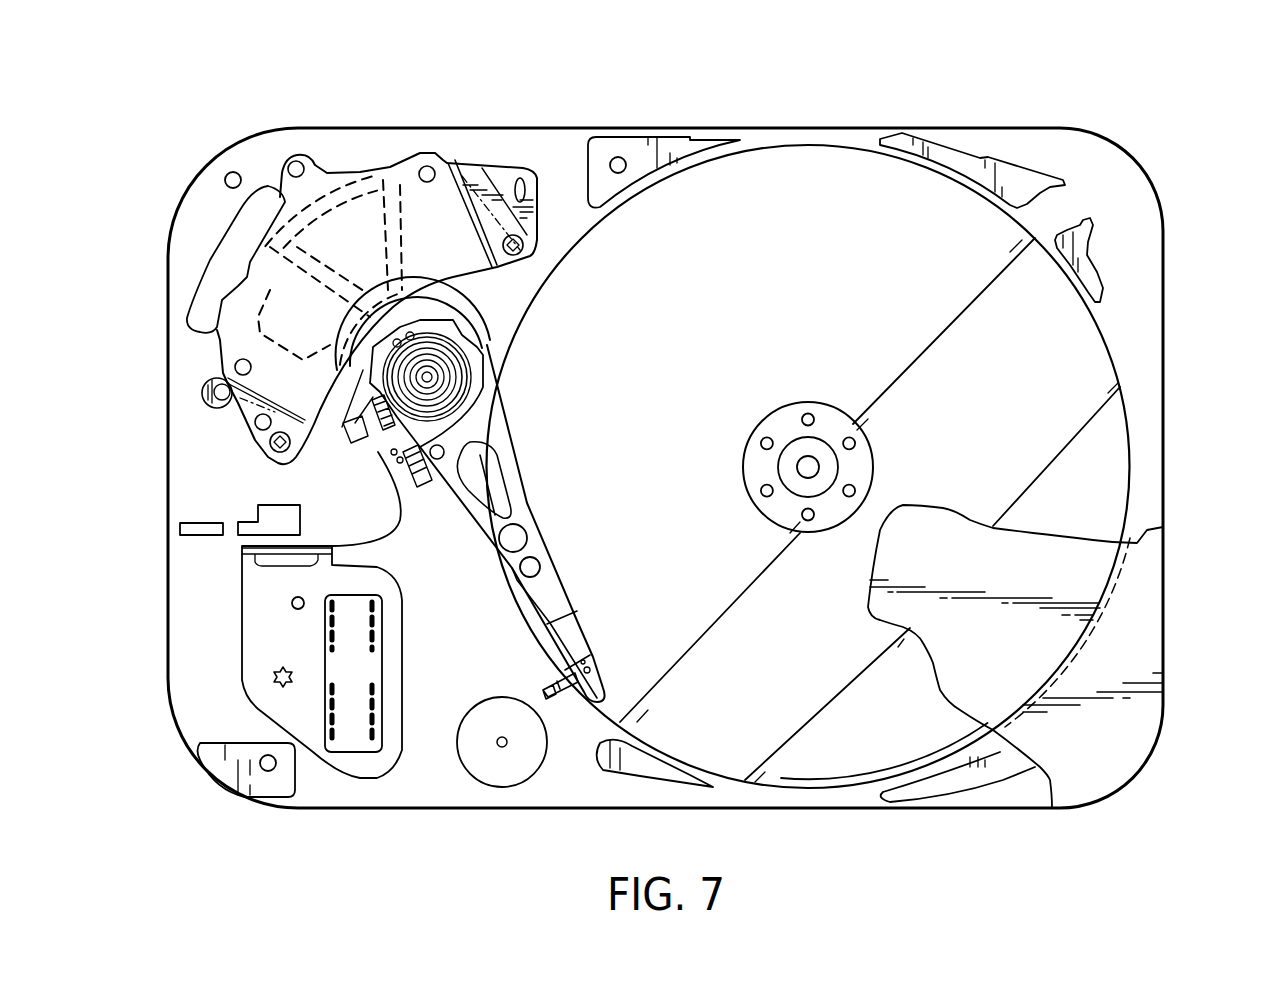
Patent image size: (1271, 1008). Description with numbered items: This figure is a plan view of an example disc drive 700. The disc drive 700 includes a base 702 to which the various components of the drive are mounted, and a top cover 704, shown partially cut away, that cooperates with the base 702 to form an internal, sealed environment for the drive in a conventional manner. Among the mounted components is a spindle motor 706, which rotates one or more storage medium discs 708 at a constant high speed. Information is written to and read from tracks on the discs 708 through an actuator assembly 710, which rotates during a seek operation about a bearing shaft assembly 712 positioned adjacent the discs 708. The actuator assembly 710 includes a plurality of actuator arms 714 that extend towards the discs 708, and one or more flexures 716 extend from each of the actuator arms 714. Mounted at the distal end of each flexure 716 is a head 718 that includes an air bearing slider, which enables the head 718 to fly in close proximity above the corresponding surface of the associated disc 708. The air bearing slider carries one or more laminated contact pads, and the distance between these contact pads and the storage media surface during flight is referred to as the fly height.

The disc drive 700 is at (128, 118).
The base 702 is at (556, 150).
The top cover 704 is at (1133, 678).
The spindle motor 706 is at (812, 466).
The storage medium disc 708 is at (783, 205).
The actuator assembly 710 is at (525, 477).
The bearing shaft assembly 712 is at (433, 377).
The actuator arm 714 is at (543, 528).
The flexure 716 is at (580, 633).
The head 718 is at (603, 685).